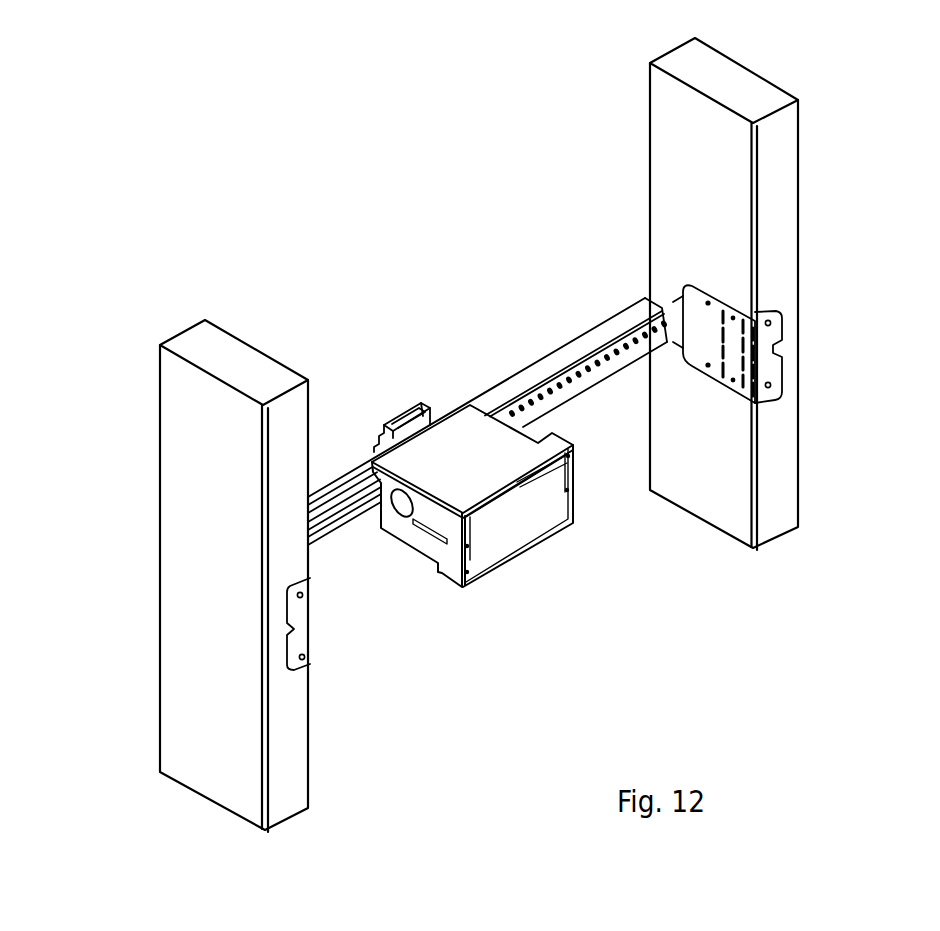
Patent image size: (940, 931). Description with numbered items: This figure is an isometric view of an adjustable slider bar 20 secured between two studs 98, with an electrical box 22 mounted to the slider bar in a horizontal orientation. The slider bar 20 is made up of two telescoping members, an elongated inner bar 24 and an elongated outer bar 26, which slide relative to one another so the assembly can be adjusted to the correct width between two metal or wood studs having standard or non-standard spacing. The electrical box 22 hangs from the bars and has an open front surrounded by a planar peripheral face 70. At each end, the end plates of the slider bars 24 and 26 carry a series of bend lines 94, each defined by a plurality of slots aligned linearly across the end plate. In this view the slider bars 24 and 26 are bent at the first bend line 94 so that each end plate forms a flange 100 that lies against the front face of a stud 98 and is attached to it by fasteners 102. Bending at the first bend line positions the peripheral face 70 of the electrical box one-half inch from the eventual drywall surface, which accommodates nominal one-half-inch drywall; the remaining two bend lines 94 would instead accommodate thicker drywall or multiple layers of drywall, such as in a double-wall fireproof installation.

The adjustable slider bar 20 is at (525, 372).
The electrical box 22 is at (520, 558).
The elongated inner bar 24 is at (333, 475).
The elongated outer bar 26 is at (592, 338).
The planar peripheral face 70 is at (575, 505).
The bend line 94 is at (760, 348).
The stud 98 is at (228, 511).
The flange 100 is at (785, 322).
The fasteners 102 is at (770, 387).